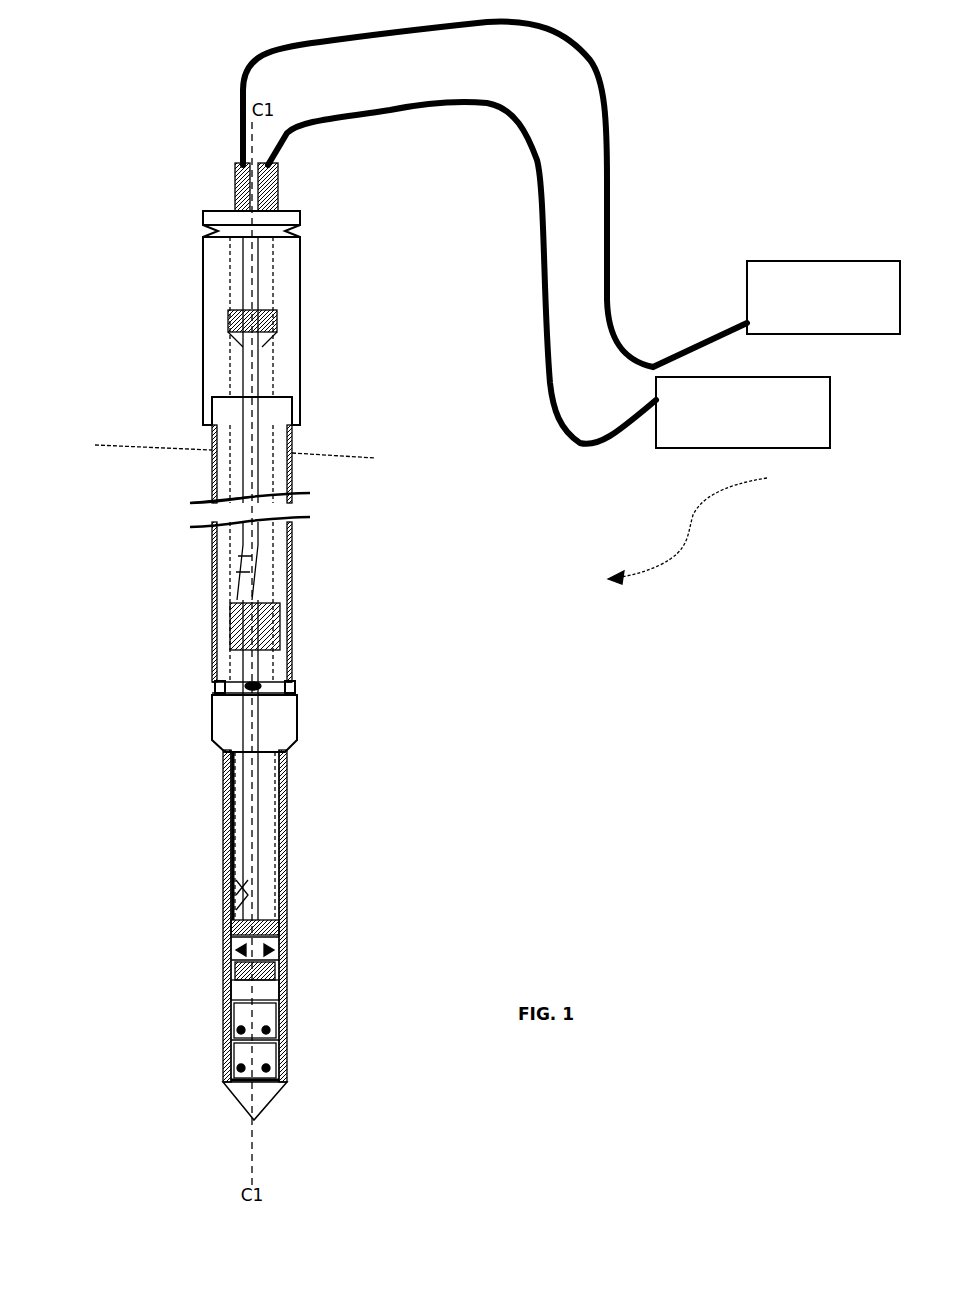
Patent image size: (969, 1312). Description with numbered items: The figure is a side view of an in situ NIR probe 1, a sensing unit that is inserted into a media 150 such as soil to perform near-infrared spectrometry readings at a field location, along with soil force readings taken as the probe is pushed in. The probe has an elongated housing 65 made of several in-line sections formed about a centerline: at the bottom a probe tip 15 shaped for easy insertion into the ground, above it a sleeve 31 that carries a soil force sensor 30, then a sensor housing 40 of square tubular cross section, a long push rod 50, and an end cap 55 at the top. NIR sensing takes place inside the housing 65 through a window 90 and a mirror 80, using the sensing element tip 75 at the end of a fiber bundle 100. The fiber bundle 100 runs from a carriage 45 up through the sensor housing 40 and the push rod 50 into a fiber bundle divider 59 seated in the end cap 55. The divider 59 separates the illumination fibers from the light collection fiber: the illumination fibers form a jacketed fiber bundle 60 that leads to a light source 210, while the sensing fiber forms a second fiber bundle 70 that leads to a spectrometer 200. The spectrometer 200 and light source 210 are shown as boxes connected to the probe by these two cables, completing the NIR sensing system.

The NIR probe 1 is at (487, 527).
The probe tip 15 is at (265, 1105).
The soil force sensor 30 is at (275, 1035).
The sleeve 31 is at (235, 1015).
The sensor housing 40 is at (297, 720).
The carriage 45 is at (283, 625).
The push rod 50 is at (300, 595).
The end cap 55 is at (290, 282).
The fiber bundle divider 59 is at (237, 340).
The fiber bundle 60 is at (275, 193).
The housing 65 is at (295, 558).
The fiber bundle 70 is at (238, 188).
The sensing element tip 75 is at (228, 873).
The mirror 80 is at (228, 885).
The window 90 is at (225, 895).
The fiber bundle 100 is at (252, 533).
The media 150 is at (137, 445).
The spectrometer 200 is at (823, 297).
The light source 210 is at (743, 412).